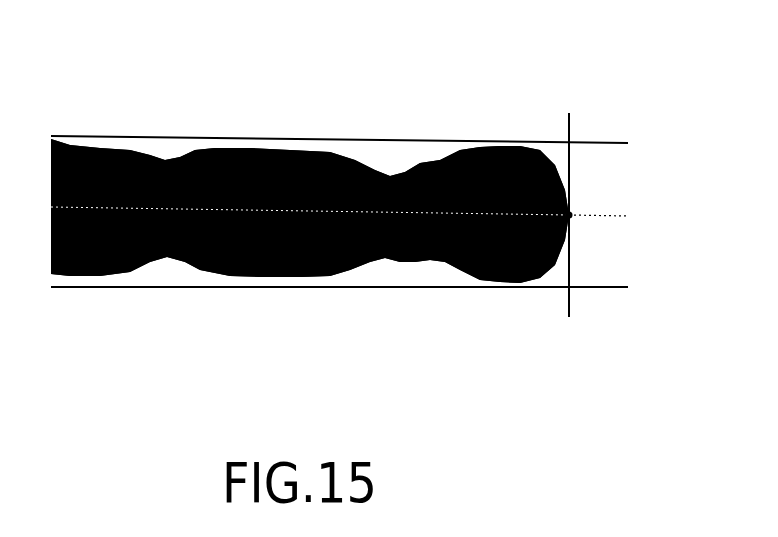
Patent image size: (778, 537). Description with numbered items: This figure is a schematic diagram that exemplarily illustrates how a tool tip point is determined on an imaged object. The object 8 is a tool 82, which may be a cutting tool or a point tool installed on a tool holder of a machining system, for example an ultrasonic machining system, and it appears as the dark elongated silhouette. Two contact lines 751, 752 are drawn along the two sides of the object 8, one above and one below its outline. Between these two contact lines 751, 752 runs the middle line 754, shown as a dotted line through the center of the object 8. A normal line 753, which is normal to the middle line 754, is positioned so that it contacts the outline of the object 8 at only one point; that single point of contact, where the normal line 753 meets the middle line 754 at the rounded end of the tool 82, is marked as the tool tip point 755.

The object 8 is at (191, 148).
The tool 82 is at (310, 211).
The contact line 751 is at (393, 142).
The contact line 752 is at (387, 289).
The normal line 753 is at (571, 181).
The middle line 754 is at (613, 215).
The tool tip point 755 is at (570, 217).